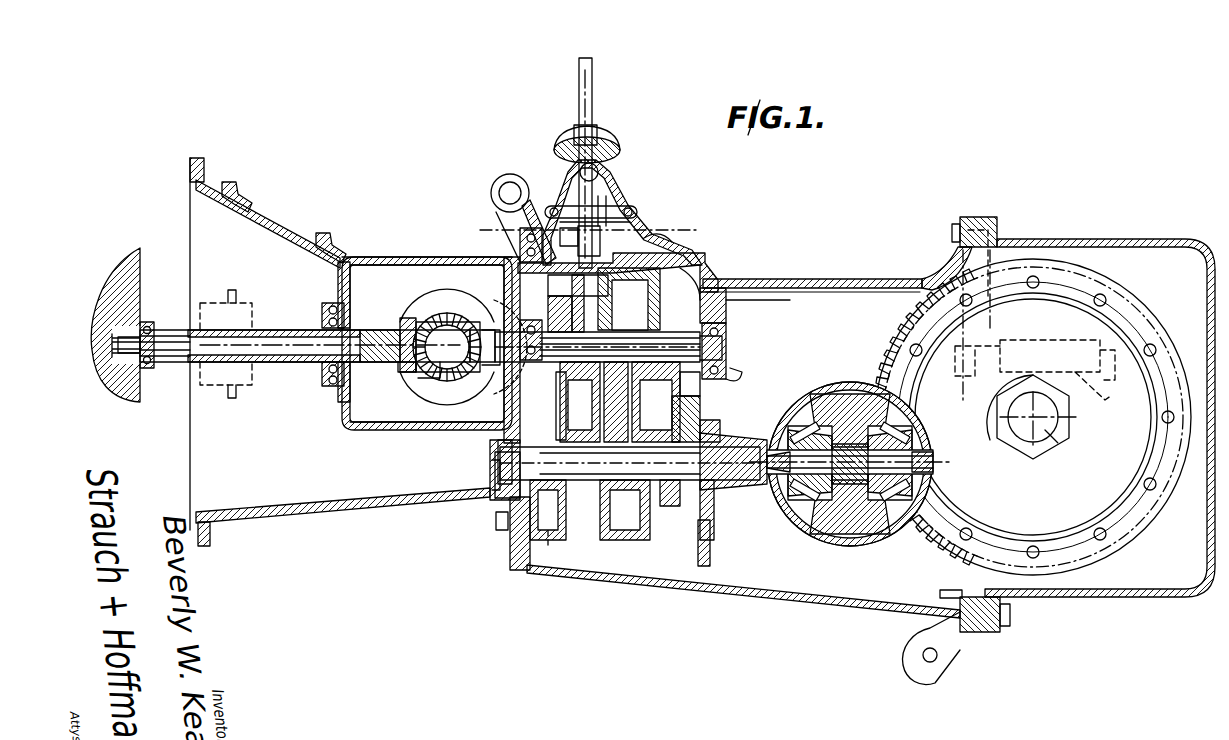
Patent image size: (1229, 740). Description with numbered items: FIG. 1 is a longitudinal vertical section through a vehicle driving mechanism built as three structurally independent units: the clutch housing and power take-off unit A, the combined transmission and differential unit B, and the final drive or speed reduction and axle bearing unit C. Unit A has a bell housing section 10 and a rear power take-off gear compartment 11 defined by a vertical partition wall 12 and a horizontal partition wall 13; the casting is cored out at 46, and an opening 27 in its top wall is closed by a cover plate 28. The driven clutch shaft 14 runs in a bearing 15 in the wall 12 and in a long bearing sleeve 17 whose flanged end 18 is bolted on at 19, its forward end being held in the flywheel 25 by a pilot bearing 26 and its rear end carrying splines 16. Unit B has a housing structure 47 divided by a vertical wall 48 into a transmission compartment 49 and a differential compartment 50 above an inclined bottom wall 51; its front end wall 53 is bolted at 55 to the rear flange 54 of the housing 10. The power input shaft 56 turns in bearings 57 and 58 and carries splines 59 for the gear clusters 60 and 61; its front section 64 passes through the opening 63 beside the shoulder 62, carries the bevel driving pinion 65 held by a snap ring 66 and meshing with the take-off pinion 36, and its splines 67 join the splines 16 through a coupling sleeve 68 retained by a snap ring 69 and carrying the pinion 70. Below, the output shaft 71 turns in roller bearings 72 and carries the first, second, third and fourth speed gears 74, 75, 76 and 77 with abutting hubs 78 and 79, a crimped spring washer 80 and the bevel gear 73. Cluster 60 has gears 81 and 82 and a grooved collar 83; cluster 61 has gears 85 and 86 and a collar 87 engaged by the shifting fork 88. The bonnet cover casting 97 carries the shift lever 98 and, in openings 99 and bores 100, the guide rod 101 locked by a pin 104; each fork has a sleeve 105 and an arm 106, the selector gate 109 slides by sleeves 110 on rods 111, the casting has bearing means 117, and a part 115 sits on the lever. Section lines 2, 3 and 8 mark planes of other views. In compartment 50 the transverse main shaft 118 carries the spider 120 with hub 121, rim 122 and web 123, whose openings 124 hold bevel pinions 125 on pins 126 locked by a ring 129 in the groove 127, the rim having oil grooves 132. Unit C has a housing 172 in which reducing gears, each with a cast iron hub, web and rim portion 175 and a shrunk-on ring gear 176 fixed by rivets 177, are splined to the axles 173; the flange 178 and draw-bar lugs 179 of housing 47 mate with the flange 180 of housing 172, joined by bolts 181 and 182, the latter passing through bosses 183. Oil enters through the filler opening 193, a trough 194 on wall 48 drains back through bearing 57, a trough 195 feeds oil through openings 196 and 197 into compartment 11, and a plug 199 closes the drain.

The section line 2- 2 is at (80, 356).
The section line 3- 3 is at (562, 52).
The section line 8- 8 is at (480, 242).
The bell housing section 10 is at (392, 265).
The power take-off gear compartment 11 is at (406, 282).
The vertical partition wall 12 is at (355, 268).
The horizontal partition wall 13 is at (378, 425).
The driven clutch shaft 14 is at (278, 330).
The anti-friction bearing 15 is at (362, 370).
The splines 16 is at (392, 330).
The bearing sleeve 17 is at (328, 322).
The flanged end 18 is at (330, 385).
The bolts 19 is at (338, 300).
The flywheel 25 is at (126, 282).
The pilot bearing 26 is at (148, 357).
The opening 27 is at (292, 232).
The cover plate 28 is at (262, 196).
The bevel pinion 36 is at (440, 423).
The cored-out portion 46 is at (375, 498).
The housing structure 47 is at (800, 278).
The vertical wall 48 is at (728, 312).
The transmission gearing compartment 49 is at (720, 283).
The differential gearing compartment 50 is at (850, 308).
The bottom wall 51 is at (728, 590).
The front end wall 53 is at (498, 442).
The rear end wall flange 54 is at (498, 500).
The bolts 55 is at (494, 525).
The power input shaft 56 is at (728, 348).
The anti-friction bearing 57 is at (705, 575).
The supporting bearing 58 is at (502, 378).
The peripheral splines 59 is at (608, 330).
The speed selector gear cluster 60 is at (576, 380).
The gear cluster 61 is at (672, 336).
The annular shoulder 62 is at (496, 318).
The opening 63 is at (466, 322).
The front end section 64 is at (446, 314).
The bevel driving pinion 65 is at (475, 425).
The snap ring 66 is at (448, 347).
The splines 67 is at (412, 320).
The coupling sleeve 68 is at (404, 370).
The snap ring 69 is at (436, 380).
The driving pinion 70 is at (430, 300).
The power output shaft 71 is at (590, 482).
The anti-friction roller bearing 72 is at (718, 425).
The bevel gear 73 is at (428, 498).
The first speed gear 74 is at (552, 478).
The second speed gear 75 is at (604, 532).
The third speed gear 76 is at (636, 532).
The fourth speed gear 77 is at (682, 500).
The hub portions 78 is at (571, 406).
The hub portions 79 is at (650, 405).
The crimped spring washer 80 is at (660, 458).
The first speed gear 81 is at (562, 320).
The second speed gear 82 is at (588, 304).
The grooved collar 83 is at (614, 404).
The gear 85 is at (680, 418).
The gear 86 is at (700, 293).
The grooved collar 87 is at (682, 395).
The shifting fork 88 is at (629, 289).
The bonnet type cover casting 97 is at (560, 180).
The shift lever 98 is at (612, 178).
The horizontal openings 99 is at (522, 240).
The horizontal bores 100 is at (716, 268).
The shifter fork guide rod 101 is at (422, 372).
The pin 104 is at (476, 226).
The sleeve 105 is at (652, 240).
The off-set arm 106 is at (605, 232).
The selector gate 109 is at (606, 200).
The sleeves 110 is at (640, 204).
The rods 111 is at (640, 202).
The shift lever 115 is at (596, 140).
The bearing means 117 is at (492, 192).
The main shaft 118 is at (818, 520).
The spider 120 is at (852, 522).
The hub portion 121 is at (858, 398).
The rim portion 122 is at (920, 486).
The web portion 123 is at (920, 530).
The openings 124 is at (812, 420).
The bevel pinions 125 is at (834, 415).
The pins 126 is at (790, 450).
The annular groove 127 is at (940, 500).
The locking ring 129 is at (850, 546).
The grooves 132 is at (928, 474).
The housing 172 is at (1180, 570).
The driving axles 173 is at (1060, 438).
The hub, web and rim portion 175 is at (1050, 300).
The ring gear 176 is at (1090, 265).
The rivets 177 is at (1140, 340).
The flange 178 is at (968, 632).
The draw-bar lugs 179 is at (948, 660).
The flange 180 is at (1000, 632).
The bolts 181 is at (1010, 618).
The bolts 182 is at (1196, 417).
The bosses 183 is at (1070, 345).
The filler opening 193 is at (564, 519).
The trough 194 is at (738, 372).
The oil collecting trough 195 is at (533, 333).
The registering openings 196 is at (492, 288).
The registering openings 197 is at (492, 346).
The plug 199 is at (965, 597).
The clutch housing and power take-off unit A is at (354, 258).
The combined transmission and differential unit B is at (818, 278).
The final drive or speed reduction and axle bearing unit C is at (1190, 592).